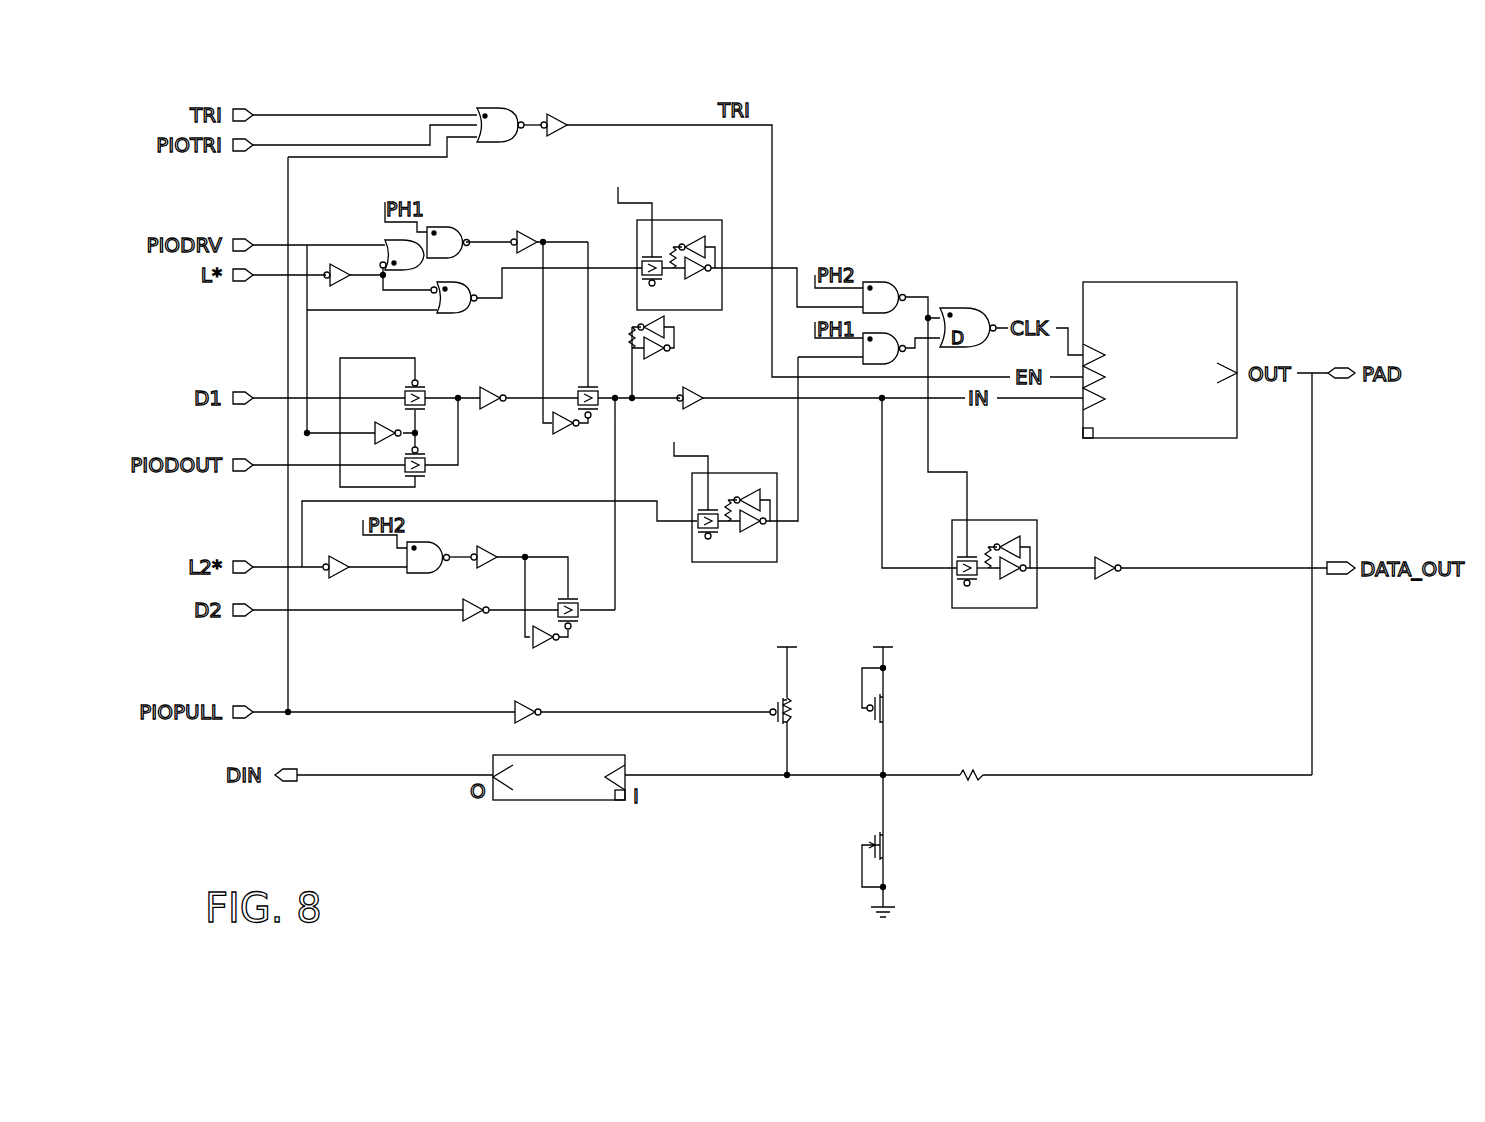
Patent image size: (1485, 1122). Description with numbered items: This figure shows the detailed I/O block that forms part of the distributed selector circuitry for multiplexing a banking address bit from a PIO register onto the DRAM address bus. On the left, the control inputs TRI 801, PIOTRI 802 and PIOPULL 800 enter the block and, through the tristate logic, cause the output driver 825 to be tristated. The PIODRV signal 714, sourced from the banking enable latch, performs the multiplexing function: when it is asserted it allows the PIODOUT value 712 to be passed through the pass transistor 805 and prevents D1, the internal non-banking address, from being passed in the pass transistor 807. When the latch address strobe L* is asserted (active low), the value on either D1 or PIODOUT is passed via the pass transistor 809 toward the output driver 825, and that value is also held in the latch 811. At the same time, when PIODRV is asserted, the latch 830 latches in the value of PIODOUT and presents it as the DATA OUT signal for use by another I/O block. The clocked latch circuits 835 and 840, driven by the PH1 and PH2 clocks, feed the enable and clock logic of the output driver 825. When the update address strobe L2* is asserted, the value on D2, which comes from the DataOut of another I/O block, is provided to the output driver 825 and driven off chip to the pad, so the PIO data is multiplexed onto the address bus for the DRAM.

The TRI signal 801 is at (238, 108).
The PIOTRI signal 802 is at (238, 152).
The PIODRV signal 714 is at (238, 238).
The PIODOUT signal 712 is at (238, 472).
The PIOPULL signal 800 is at (243, 706).
The pass transistor 807 is at (420, 382).
The pass transistor 805 is at (422, 476).
The pass transistor 809 is at (597, 420).
The latch 811 is at (680, 336).
The latch circuit 835 is at (675, 220).
The latch circuit 840 is at (752, 562).
The latch 830 is at (1018, 608).
The output driver 825 is at (1193, 282).